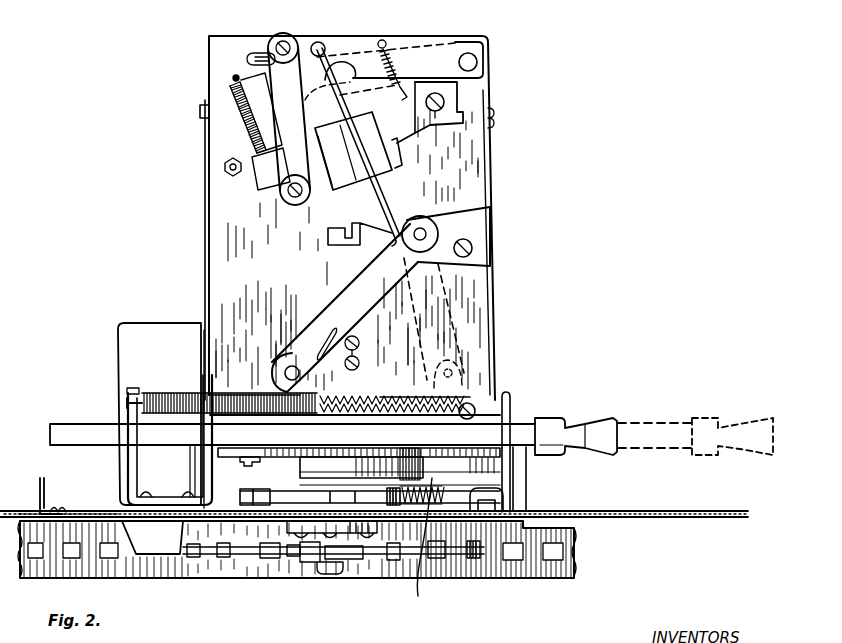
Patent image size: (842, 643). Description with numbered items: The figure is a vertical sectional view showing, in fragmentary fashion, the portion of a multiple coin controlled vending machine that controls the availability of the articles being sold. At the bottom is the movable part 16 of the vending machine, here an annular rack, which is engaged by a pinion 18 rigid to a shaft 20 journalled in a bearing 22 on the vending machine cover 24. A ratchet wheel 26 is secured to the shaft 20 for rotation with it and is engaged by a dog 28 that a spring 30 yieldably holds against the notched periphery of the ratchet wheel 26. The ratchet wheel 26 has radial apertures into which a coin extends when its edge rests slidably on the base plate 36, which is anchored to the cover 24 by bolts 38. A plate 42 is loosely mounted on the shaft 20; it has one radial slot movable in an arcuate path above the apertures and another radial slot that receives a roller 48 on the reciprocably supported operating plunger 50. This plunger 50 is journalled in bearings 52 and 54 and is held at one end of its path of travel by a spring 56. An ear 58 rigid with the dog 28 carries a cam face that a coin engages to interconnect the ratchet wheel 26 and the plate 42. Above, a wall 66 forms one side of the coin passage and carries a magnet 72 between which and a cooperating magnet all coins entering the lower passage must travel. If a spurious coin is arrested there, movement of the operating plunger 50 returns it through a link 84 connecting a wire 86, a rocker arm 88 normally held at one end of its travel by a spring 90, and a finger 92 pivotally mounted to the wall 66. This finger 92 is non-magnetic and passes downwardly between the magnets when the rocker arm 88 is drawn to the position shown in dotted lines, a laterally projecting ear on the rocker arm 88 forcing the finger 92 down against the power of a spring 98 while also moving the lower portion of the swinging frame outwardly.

The movable part 16 is at (294, 560).
The pinion 18 is at (293, 562).
The shaft 20 is at (322, 574).
The bearing 22 is at (296, 522).
The vending machine cover 24 is at (628, 511).
The ratchet wheel 26 is at (241, 498).
The dog 28 is at (505, 495).
The spring 30 is at (421, 546).
The base plate 36 is at (98, 506).
The bolts 38 is at (56, 490).
The plate 42 is at (359, 466).
The roller 48 is at (240, 468).
The operating plunger 50 is at (86, 426).
The bearing 52 is at (214, 438).
The bearing 54 is at (513, 425).
The spring 56 is at (168, 393).
The ear 58 is at (420, 482).
The wall 66 is at (478, 93).
The magnet 72 is at (427, 138).
The link 84 is at (355, 290).
The wire 86 is at (340, 190).
The rocker arm 88 is at (450, 50).
The spring 90 is at (398, 46).
The finger 92 is at (272, 178).
The spring 98 is at (244, 121).